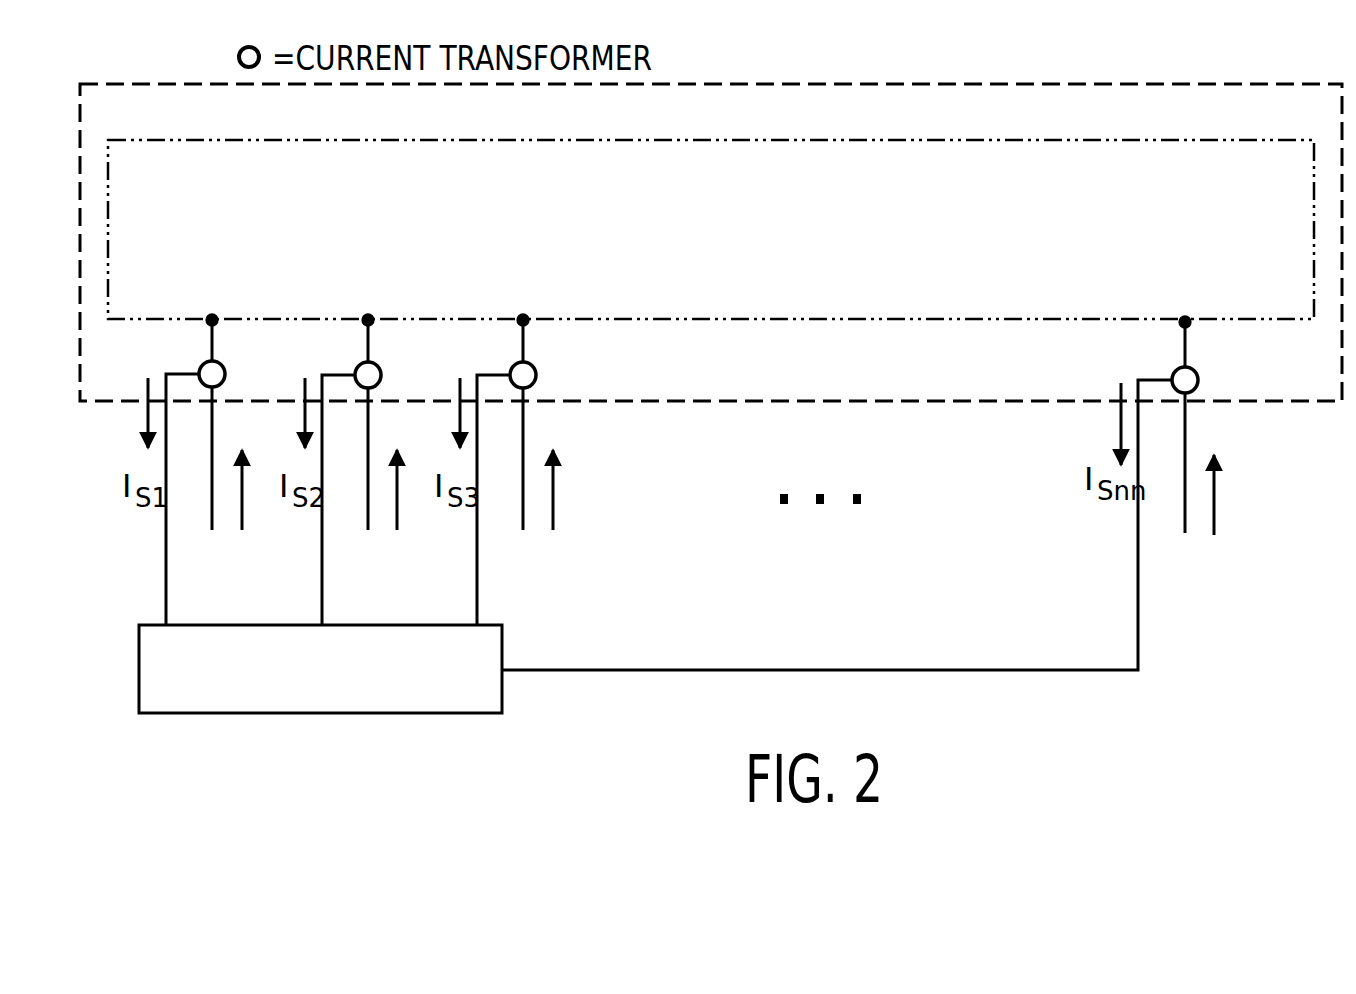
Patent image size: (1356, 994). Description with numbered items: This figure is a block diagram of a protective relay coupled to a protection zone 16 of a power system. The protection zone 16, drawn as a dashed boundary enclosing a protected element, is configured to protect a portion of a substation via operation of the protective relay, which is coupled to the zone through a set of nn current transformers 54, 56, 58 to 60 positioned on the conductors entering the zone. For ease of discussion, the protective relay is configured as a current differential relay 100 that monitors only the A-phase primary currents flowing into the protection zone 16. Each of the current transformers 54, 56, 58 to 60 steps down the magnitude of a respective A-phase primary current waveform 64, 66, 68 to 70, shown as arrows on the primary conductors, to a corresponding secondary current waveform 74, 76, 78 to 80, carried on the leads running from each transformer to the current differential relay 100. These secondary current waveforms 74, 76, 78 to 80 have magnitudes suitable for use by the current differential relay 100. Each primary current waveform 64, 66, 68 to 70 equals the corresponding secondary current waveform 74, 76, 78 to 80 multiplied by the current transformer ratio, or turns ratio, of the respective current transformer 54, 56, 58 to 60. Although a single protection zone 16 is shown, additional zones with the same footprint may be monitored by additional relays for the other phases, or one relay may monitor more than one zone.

The protection zone 16 is at (1047, 87).
The current transformer 54 is at (227, 374).
The current transformer 56 is at (383, 375).
The current transformer 58 is at (538, 375).
The current transformer 60 is at (1200, 380).
The A-phase primary current waveform 64 is at (242, 512).
The A-phase primary current waveform 66 is at (397, 512).
The A-phase primary current waveform 68 is at (553, 512).
The A-phase primary current waveform 70 is at (1216, 503).
The secondary current waveform 74 is at (170, 600).
The secondary current waveform 76 is at (326, 600).
The secondary current waveform 78 is at (481, 600).
The secondary current waveform 80 is at (1136, 600).
The current differential relay 100 is at (320, 713).